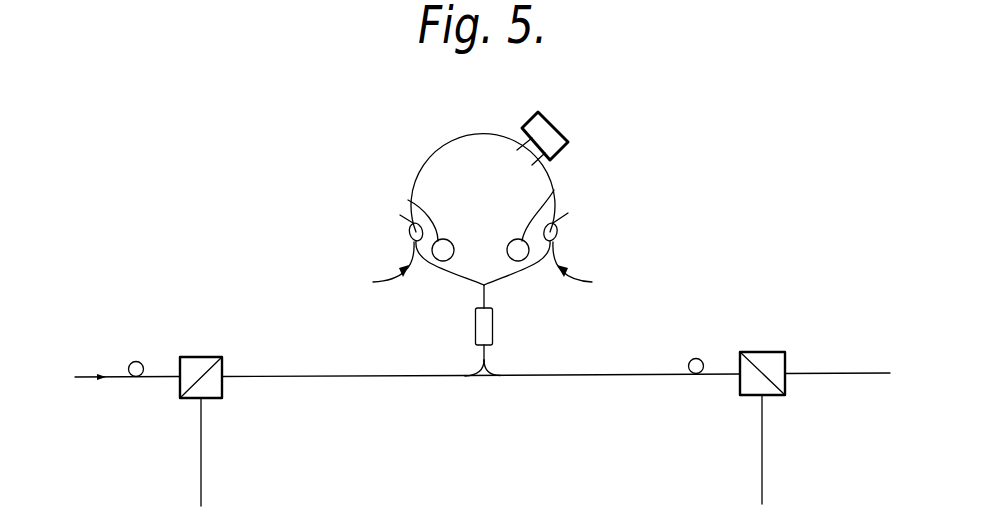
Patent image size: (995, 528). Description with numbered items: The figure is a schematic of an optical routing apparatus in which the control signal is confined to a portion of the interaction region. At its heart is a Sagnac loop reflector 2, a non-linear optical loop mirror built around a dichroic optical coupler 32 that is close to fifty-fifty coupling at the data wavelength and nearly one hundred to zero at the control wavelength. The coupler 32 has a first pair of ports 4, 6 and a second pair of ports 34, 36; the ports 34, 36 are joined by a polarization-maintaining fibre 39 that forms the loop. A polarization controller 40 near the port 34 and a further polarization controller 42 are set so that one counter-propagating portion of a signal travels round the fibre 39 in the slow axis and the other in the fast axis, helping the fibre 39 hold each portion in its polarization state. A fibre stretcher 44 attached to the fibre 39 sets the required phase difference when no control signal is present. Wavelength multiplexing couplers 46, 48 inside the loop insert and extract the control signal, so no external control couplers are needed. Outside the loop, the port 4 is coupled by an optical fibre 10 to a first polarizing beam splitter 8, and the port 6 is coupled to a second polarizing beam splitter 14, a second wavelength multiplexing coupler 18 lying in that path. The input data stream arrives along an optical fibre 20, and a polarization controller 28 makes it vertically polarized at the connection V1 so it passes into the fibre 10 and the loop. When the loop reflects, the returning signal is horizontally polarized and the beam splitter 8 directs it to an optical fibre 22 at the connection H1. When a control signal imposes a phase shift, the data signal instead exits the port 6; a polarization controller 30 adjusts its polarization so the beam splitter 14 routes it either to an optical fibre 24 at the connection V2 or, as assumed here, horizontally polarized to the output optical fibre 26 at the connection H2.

The Sagnac loop reflector 2 is at (459, 200).
The polarization-maintaining fibre 39 is at (478, 129).
The fibre stretcher 44 is at (548, 133).
The polarization controller 40 is at (408, 200).
The further polarization controller 42 is at (554, 190).
The wavelength multiplexing coupler 46 is at (404, 229).
The wavelength multiplexing coupler 48 is at (560, 230).
The port 34 is at (470, 279).
The port 36 is at (497, 279).
The dichroic optical coupler 32 is at (492, 333).
The optical communication port 4 is at (467, 377).
The optical communication port 6 is at (498, 377).
The optical fibre 20 is at (115, 374).
The polarization controller 28 is at (137, 361).
The first polarizing beam splitter 8 is at (196, 357).
The optical fibre 10 is at (278, 375).
The optical fibre 22 is at (202, 470).
The second wavelength multiplexing coupler 18 is at (609, 373).
The polarization controller 30 is at (697, 358).
The second polarizing beam splitter 14 is at (750, 352).
The optical fibre 24 is at (855, 370).
The optical fibre 26 is at (765, 468).
The connection V1 is at (173, 385).
The connection H1 is at (208, 403).
The connection V2 is at (792, 367).
The connection H2 is at (768, 398).